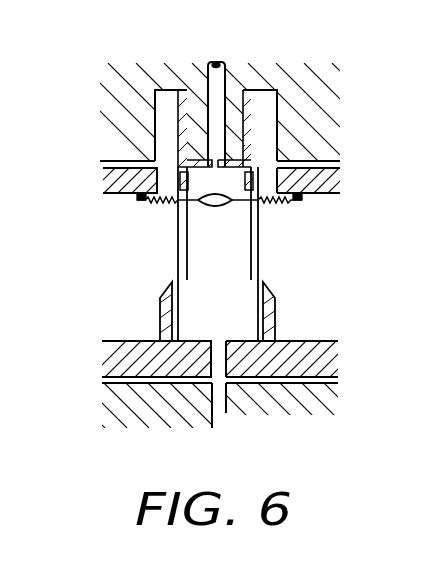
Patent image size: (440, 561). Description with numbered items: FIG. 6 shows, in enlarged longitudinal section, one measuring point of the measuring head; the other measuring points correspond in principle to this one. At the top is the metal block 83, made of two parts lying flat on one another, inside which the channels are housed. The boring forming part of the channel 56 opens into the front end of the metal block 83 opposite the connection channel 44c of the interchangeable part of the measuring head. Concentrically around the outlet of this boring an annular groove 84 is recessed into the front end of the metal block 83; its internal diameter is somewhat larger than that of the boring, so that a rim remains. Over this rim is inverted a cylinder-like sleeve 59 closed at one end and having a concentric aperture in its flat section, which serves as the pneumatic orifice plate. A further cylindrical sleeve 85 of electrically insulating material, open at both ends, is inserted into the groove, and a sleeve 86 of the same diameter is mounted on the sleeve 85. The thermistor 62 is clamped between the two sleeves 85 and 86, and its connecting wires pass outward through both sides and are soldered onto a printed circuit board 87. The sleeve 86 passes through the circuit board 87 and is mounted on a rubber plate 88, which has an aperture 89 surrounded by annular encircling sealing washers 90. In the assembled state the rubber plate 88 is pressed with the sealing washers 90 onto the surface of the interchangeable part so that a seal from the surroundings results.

The channel 56 is at (223, 68).
The metal block 83 is at (133, 107).
The annular groove 84 is at (270, 112).
The pneumatic orifice plate 59 is at (255, 143).
The printed circuit board 87 is at (338, 176).
The cylindrical sleeve 85 is at (177, 191).
The thermistor 62 is at (215, 206).
The sleeve 86 is at (257, 253).
The aperture 89 is at (218, 357).
The rubber plate 88 is at (312, 350).
The sealing washers 90 is at (210, 380).
The connection channel 44c is at (220, 412).